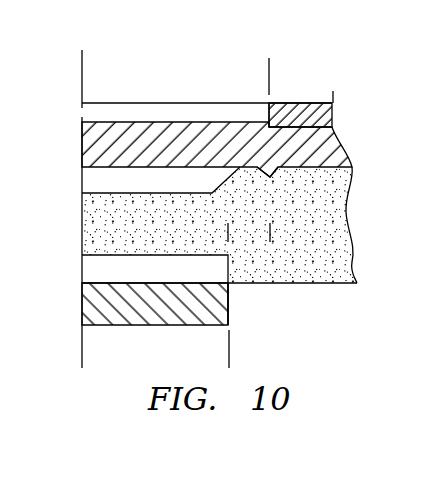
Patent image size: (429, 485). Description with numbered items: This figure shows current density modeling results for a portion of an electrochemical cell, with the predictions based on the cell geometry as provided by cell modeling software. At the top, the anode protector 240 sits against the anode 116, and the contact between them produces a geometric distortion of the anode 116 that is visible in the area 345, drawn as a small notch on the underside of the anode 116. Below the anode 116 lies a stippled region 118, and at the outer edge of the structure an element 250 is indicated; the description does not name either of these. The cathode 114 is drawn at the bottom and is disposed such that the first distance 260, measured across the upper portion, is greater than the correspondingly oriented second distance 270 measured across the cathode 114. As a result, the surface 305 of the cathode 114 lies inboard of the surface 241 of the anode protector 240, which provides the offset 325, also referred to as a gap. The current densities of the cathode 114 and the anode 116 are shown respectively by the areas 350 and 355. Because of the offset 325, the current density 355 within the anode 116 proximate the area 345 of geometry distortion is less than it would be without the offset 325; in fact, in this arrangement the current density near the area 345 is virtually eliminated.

The outer edge of structure 250 is at (85, 51).
The first distance 260 is at (269, 65).
The surface of the anode protector 241 is at (268, 112).
The anode protector 240 is at (307, 102).
The area of geometry distortion 345 is at (272, 170).
The current density of the anode 355 is at (107, 178).
The anode 116 is at (166, 154).
The substrate 118 is at (167, 244).
The offset 325 is at (228, 236).
The current density of the cathode 350 is at (103, 265).
The cathode 114 is at (169, 312).
The second distance 270 is at (82, 353).
The surface of the cathode 305 is at (233, 302).